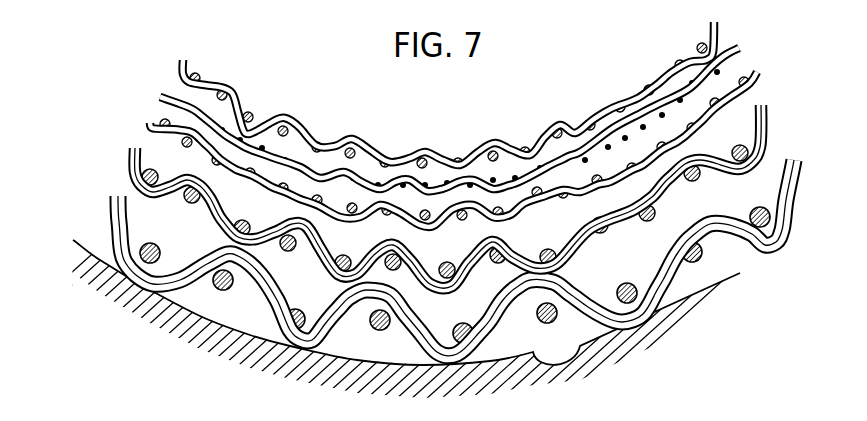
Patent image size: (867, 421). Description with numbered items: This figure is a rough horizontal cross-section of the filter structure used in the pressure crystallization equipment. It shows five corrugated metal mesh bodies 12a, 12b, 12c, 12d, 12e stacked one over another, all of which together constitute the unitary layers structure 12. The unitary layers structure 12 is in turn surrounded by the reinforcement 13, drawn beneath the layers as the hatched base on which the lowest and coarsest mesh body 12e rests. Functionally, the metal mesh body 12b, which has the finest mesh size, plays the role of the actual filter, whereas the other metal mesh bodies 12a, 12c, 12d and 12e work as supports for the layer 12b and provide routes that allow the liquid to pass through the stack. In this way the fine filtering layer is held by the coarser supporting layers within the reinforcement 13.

The unitary layers structure 12 is at (185, 40).
The metal mesh body 12a is at (221, 81).
The metal mesh body 12b is at (224, 116).
The metal mesh body 12c is at (260, 134).
The metal mesh body 12d is at (166, 200).
The metal mesh body 12e is at (263, 281).
The reinforcement 13 is at (168, 331).